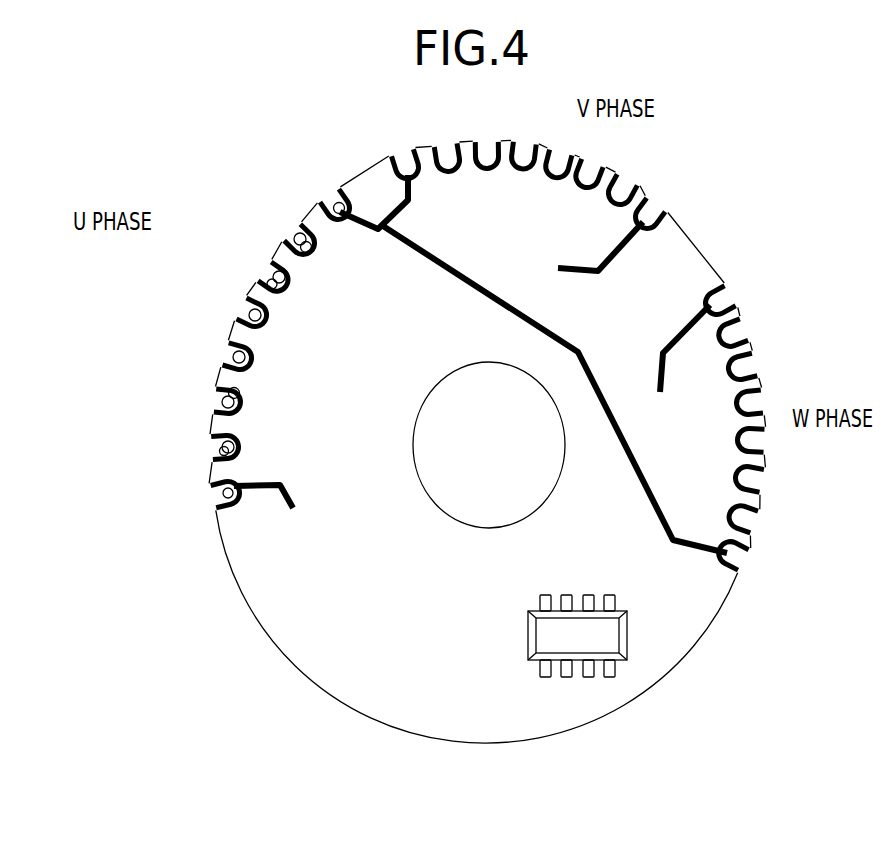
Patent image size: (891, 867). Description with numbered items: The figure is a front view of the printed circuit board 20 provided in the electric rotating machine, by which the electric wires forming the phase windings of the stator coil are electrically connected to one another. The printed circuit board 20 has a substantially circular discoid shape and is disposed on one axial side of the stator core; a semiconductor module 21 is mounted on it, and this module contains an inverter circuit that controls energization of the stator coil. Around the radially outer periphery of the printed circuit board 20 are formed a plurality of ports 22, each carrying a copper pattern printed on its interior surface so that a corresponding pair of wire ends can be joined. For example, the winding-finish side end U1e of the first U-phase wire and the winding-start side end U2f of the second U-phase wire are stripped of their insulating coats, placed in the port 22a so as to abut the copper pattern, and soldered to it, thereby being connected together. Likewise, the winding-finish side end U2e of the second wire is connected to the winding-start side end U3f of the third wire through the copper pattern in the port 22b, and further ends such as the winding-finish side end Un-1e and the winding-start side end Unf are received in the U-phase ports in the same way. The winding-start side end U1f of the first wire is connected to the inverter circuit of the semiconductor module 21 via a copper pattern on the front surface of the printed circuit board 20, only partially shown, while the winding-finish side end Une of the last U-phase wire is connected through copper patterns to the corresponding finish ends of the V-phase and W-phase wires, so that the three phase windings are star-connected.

The printed circuit board 20 is at (690, 246).
The semiconductor module 21 is at (581, 640).
The port 22 is at (245, 309).
The port 22a is at (217, 455).
The port 22b is at (220, 400).
The winding-finish side end of electric wire Un Une is at (336, 204).
The winding-start side end of electric wire Un Unf is at (304, 234).
The winding-finish side end of electric wire Un-1 Un-1e is at (300, 241).
The winding-start side end of electric wire U3 U3f is at (225, 387).
The winding-finish side end of electric wire U2 U2e is at (223, 400).
The winding-start side end of electric wire U2 U2f is at (221, 440).
The winding-finish side end of electric wire U1 U1e is at (220, 444).
The winding-start side end of electric wire U1 U1f is at (221, 497).